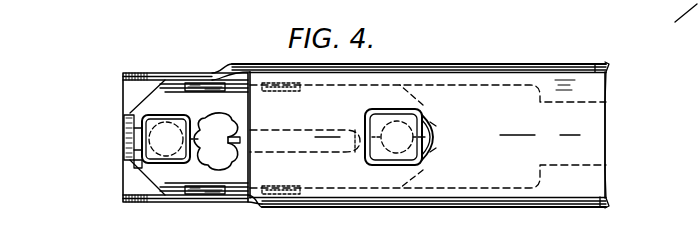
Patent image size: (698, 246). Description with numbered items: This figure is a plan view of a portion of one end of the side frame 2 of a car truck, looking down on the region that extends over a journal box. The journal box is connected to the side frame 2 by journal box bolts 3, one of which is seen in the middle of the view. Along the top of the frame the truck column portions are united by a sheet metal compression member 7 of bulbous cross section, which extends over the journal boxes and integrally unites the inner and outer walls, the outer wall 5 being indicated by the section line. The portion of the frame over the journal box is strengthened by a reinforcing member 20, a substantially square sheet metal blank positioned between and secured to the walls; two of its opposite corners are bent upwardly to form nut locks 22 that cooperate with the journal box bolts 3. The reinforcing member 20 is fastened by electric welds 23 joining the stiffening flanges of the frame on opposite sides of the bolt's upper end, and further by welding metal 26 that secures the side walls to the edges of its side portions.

The side frame 2 is at (606, 94).
The journal box bolts 3 is at (178, 123).
The outer wall 5 is at (73, 137).
The sheet metal compression member 7 is at (560, 78).
The reinforcing member 20 is at (150, 110).
The nut locks 22 is at (140, 162).
The electric welds 23 is at (126, 135).
The welding metal 26 is at (198, 82).